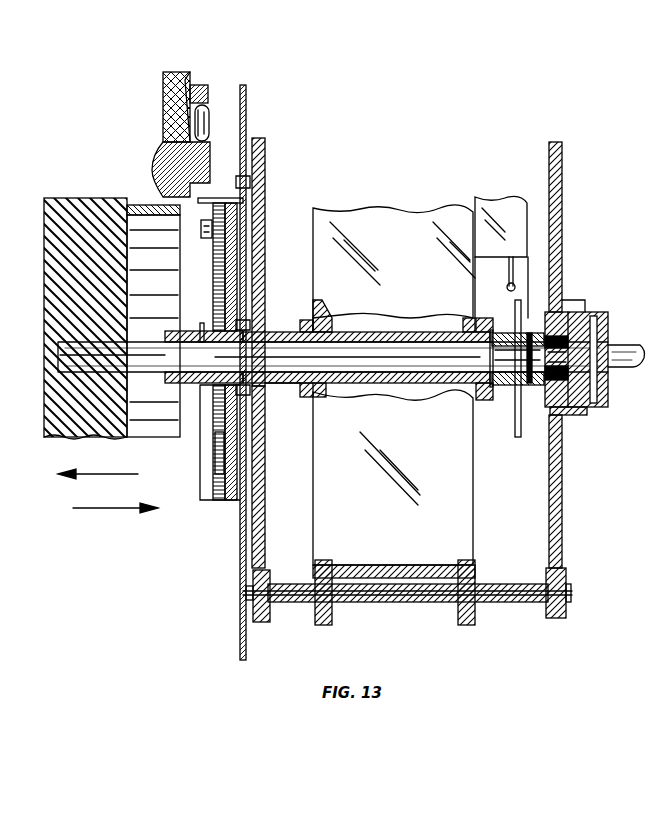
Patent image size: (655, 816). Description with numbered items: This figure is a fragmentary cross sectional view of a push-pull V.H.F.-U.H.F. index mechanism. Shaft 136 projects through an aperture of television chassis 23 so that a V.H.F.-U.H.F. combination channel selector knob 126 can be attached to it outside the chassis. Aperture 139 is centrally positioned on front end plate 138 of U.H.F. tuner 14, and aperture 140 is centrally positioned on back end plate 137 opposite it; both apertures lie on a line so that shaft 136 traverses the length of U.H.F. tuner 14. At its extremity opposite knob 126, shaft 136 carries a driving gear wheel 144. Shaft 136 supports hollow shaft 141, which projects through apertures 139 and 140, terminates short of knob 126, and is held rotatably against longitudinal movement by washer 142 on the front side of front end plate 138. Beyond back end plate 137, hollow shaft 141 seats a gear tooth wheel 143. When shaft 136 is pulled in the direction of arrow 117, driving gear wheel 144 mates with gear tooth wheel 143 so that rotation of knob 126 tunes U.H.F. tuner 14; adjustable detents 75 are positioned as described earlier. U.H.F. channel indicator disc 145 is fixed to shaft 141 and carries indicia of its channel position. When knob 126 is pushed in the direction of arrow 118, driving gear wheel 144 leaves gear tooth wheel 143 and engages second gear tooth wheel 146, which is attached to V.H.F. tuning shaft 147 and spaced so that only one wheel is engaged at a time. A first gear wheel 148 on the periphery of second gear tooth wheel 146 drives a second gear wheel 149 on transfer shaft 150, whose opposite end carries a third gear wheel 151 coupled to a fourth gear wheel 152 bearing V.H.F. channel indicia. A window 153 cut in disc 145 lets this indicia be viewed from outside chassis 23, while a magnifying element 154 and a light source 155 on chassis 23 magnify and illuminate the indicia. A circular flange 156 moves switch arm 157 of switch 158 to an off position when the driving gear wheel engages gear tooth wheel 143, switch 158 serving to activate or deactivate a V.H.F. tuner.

The U.H.F. tuner 14 is at (366, 228).
The television chassis 23 is at (176, 80).
The adjustable detents 75 is at (212, 212).
The arrow 117 is at (116, 475).
The arrow 118 is at (99, 513).
The V.H.F.-U.H.F. combination channel selector knob 126 is at (52, 268).
The shaft 136 is at (333, 353).
The back end plate 137 is at (476, 403).
The front end plate 138 is at (316, 398).
The aperture 139 is at (323, 318).
The aperture 140 is at (463, 330).
The hollow shaft 141 is at (402, 378).
The washer 142 is at (310, 320).
The gear tooth wheel 143 is at (492, 318).
The driving gear wheel 144 is at (534, 385).
The U.H.F. channel indicator disc 145 is at (248, 128).
The second gear tooth wheel 146 is at (586, 410).
The V.H.F. tuning shaft 147 is at (618, 368).
The first gear wheel 148 is at (566, 514).
The second gear wheel 149 is at (570, 606).
The transfer shaft 150 is at (400, 600).
The third gear wheel 151 is at (262, 606).
The fourth gear wheel 152 is at (262, 512).
The window 153 is at (243, 168).
The magnifying element 154 is at (160, 184).
The light source 155 is at (206, 118).
The circular flange 156 is at (519, 440).
The switch arm 157 is at (514, 268).
The switch 158 is at (508, 204).